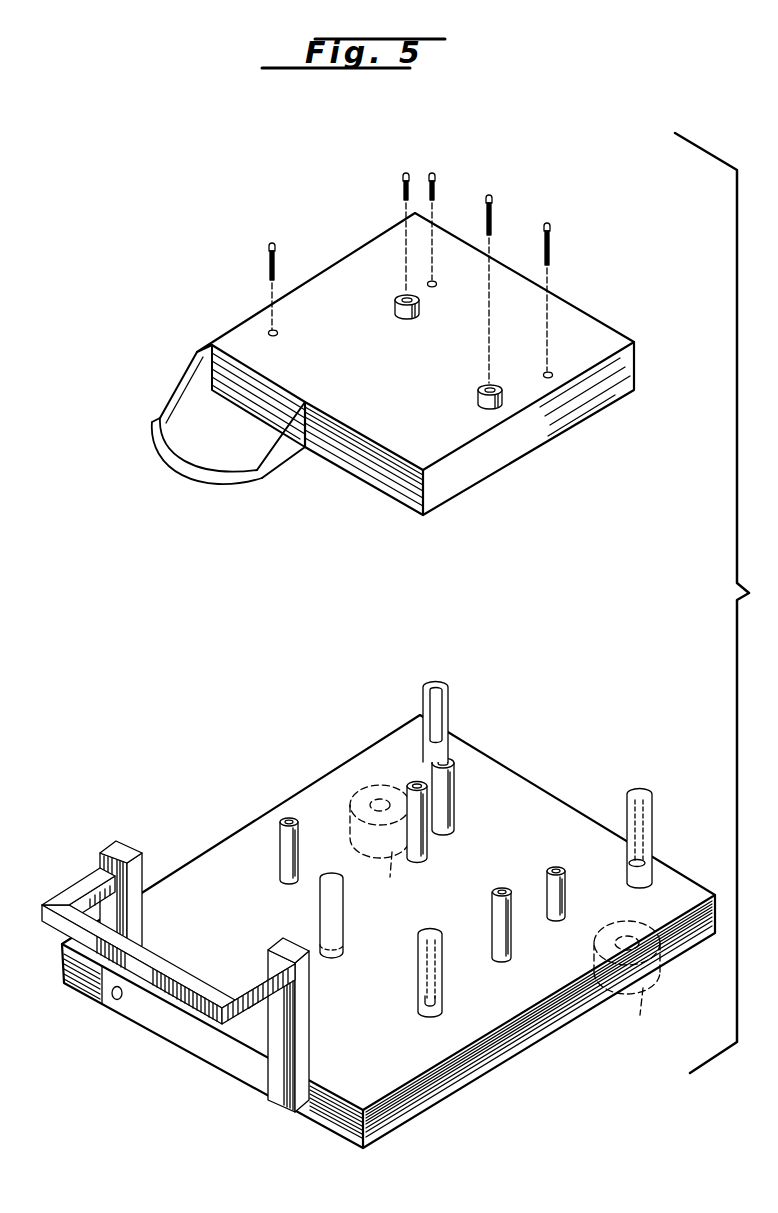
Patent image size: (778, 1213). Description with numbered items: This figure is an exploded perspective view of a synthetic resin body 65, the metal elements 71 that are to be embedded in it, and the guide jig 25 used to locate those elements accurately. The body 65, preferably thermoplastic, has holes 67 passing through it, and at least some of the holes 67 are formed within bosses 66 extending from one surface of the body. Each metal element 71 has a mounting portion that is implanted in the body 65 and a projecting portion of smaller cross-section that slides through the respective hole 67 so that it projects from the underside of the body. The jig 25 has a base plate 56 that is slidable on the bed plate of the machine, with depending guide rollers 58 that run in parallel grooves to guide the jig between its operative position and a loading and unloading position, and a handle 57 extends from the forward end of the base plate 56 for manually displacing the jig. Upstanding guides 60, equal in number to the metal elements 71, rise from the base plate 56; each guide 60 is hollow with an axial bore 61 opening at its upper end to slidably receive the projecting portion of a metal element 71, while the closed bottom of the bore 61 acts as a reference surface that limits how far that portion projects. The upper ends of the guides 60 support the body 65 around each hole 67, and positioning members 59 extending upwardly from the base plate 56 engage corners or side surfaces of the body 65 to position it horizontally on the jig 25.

The guide jig 25 is at (523, 1053).
The base plate 56 is at (467, 1079).
The handle 57 is at (177, 994).
The guide rollers 58 is at (505, 921).
The positioning members 59 is at (449, 708).
The guide 60 is at (280, 850).
The axial bore 61 is at (432, 762).
The synthetic resin body 65 is at (595, 302).
The bosses 66 is at (404, 320).
The holes 67 is at (400, 298).
The metal elements 71 is at (268, 262).